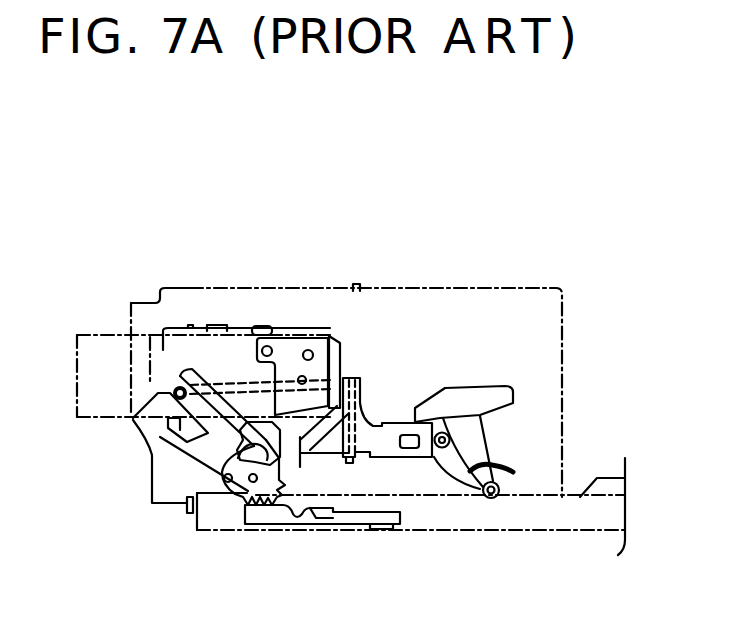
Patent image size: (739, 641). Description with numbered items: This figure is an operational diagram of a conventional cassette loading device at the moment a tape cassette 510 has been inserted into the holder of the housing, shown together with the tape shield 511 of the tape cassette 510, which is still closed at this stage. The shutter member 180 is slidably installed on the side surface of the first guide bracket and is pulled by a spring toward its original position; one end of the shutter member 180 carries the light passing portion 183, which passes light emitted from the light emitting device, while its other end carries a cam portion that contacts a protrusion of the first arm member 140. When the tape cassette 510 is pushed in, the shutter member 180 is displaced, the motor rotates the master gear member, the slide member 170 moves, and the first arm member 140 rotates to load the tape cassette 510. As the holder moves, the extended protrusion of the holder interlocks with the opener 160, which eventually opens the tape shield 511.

The tape cassette 510 is at (112, 322).
The tape shield 511 is at (328, 338).
The first arm member 140 is at (205, 450).
The shutter member 180 is at (380, 424).
The light passing portion 183 is at (412, 448).
The opener 160 is at (490, 378).
The slide member 170 is at (300, 514).